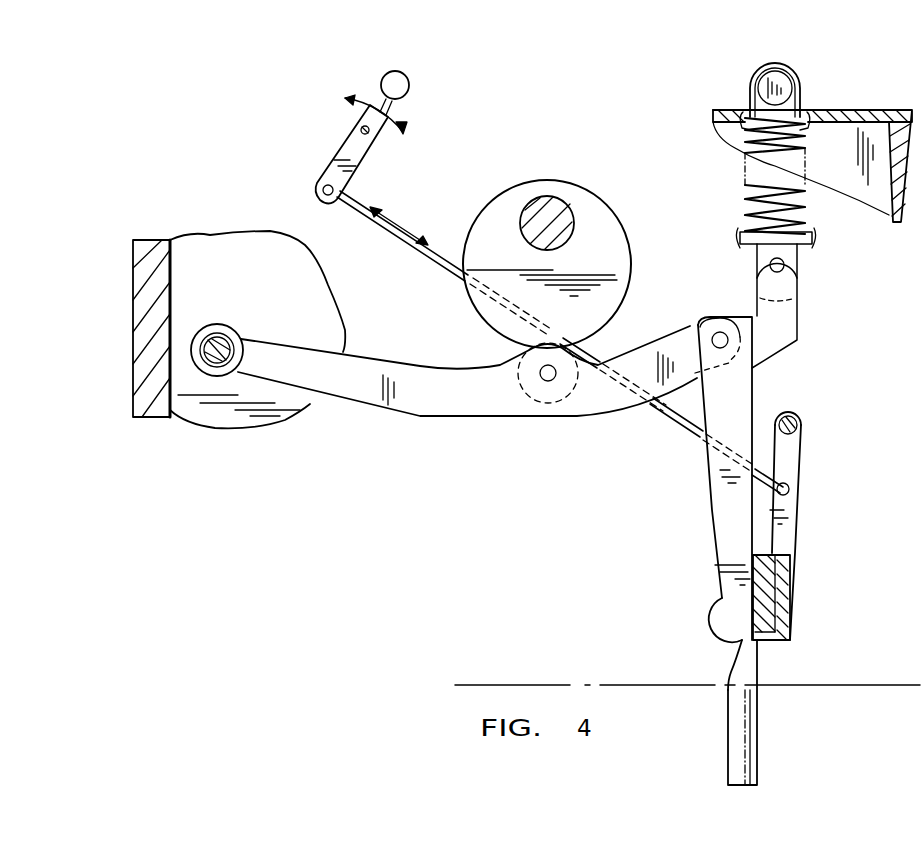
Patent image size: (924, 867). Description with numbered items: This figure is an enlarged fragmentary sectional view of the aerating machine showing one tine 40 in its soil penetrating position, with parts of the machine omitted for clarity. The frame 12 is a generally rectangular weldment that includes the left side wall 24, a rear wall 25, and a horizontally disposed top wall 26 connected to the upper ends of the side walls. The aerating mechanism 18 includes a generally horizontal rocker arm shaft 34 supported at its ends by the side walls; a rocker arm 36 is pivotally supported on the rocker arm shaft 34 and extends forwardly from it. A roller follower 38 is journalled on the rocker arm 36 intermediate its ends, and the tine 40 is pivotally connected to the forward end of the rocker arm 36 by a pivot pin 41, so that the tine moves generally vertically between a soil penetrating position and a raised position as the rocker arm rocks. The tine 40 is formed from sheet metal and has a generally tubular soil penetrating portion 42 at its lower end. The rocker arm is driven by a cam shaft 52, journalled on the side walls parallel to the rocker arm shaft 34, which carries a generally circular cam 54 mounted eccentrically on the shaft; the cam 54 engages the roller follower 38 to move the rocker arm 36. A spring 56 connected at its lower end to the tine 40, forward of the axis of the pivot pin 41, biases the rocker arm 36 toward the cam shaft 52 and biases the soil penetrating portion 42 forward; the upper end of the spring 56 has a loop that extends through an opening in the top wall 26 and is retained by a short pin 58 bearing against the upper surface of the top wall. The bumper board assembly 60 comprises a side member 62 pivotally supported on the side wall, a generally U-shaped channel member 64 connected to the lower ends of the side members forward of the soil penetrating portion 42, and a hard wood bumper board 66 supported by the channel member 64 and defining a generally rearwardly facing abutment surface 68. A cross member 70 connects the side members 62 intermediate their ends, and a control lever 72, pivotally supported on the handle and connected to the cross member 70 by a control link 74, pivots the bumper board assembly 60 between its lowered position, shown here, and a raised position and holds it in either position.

The frame 12 is at (257, 307).
The aerating mechanism 18 is at (560, 227).
The left side wall 24 is at (277, 252).
The rear wall 25 is at (138, 292).
The top wall 26 is at (852, 112).
The rocker arm shaft 34 is at (222, 338).
The rocker arm 36 is at (465, 368).
The roller follower 38 is at (530, 360).
The tine 40 is at (735, 396).
The pivot pin 41 is at (716, 335).
The soil penetrating portion 42 is at (745, 720).
The cam shaft 52 is at (547, 203).
The cam 54 is at (560, 253).
The spring 56 is at (745, 148).
The short pin 58 is at (778, 88).
The bumper board assembly 60 is at (797, 400).
The side member 62 is at (806, 509).
The channel member 64 is at (792, 590).
The bumper board 66 is at (776, 588).
The abutment surface 68 is at (777, 639).
The cross member 70 is at (790, 488).
The control lever 72 is at (402, 72).
The control link 74 is at (393, 238).